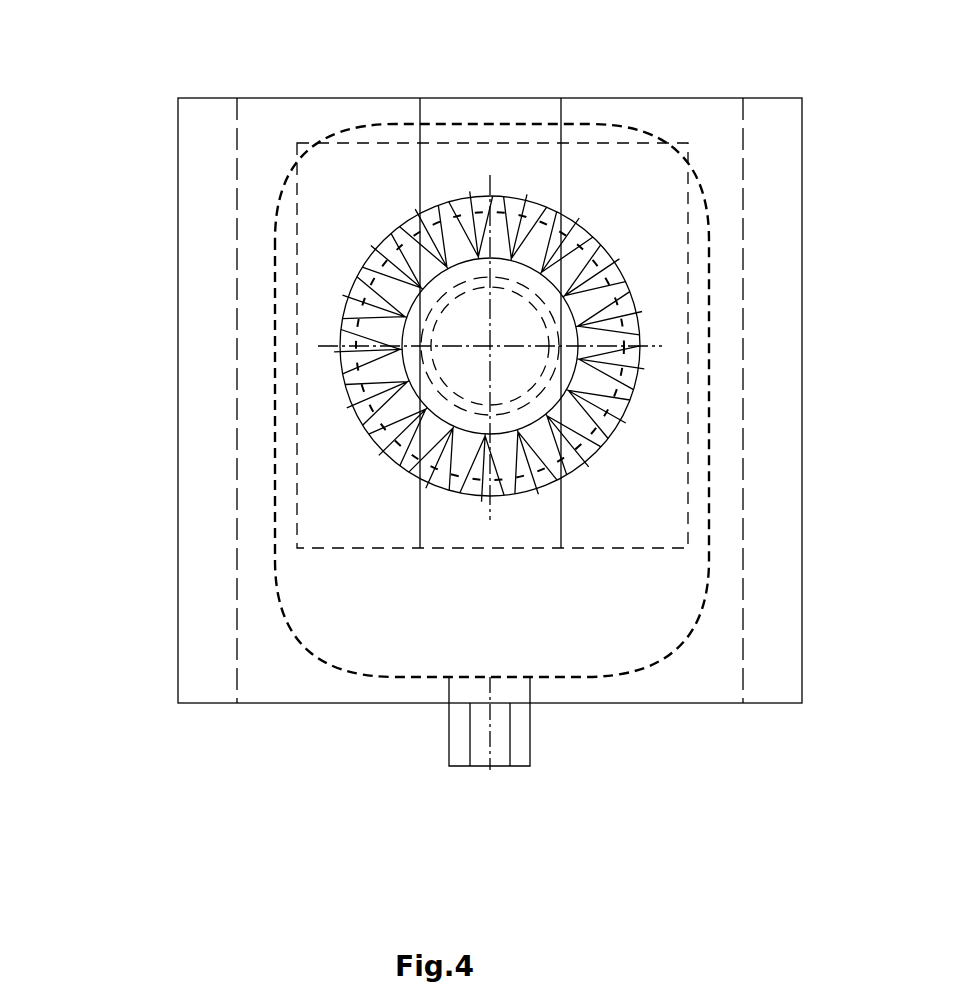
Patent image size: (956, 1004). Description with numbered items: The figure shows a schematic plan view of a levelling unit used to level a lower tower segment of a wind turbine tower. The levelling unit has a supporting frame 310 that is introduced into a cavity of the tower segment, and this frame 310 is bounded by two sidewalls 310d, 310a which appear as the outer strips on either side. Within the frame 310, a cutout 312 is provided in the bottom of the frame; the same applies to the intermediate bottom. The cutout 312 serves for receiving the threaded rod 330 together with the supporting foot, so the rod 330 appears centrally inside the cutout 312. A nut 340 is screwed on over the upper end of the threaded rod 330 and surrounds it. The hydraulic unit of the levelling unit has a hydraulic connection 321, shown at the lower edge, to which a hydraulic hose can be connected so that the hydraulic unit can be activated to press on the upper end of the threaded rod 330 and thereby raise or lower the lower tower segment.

The supporting frame 310 is at (178, 186).
The sidewall 310a is at (780, 683).
The sidewall 310d is at (216, 682).
The cutout 312 is at (548, 112).
The hydraulic connection 321 is at (530, 766).
The threaded rod 330 is at (472, 385).
The nut 340 is at (410, 228).